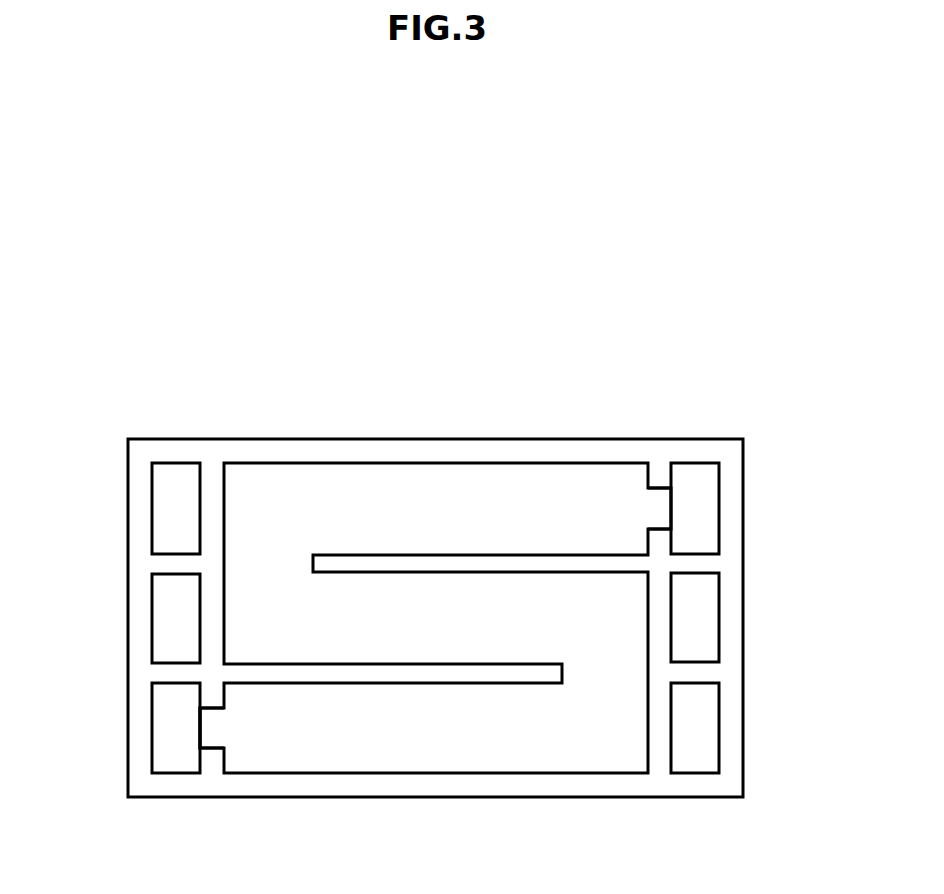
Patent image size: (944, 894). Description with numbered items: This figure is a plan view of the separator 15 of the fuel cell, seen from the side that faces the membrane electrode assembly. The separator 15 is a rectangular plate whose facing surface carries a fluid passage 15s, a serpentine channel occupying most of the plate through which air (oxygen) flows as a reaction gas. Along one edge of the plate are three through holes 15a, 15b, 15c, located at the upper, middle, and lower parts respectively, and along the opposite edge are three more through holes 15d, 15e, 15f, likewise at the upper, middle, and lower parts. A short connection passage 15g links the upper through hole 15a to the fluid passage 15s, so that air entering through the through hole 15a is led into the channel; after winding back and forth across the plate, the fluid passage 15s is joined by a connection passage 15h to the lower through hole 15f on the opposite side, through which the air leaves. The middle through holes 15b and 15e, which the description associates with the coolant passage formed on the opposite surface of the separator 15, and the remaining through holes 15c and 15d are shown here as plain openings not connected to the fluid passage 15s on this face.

The separator 15 is at (410, 368).
The fluid passage 15s is at (490, 480).
The connection passage 15g is at (660, 498).
The connection passage 15h is at (211, 732).
The through hole 15a is at (703, 504).
The through hole 15b is at (703, 614).
The through hole 15c is at (703, 725).
The through hole 15d is at (173, 521).
The through hole 15e is at (173, 632).
The through hole 15f is at (173, 742).